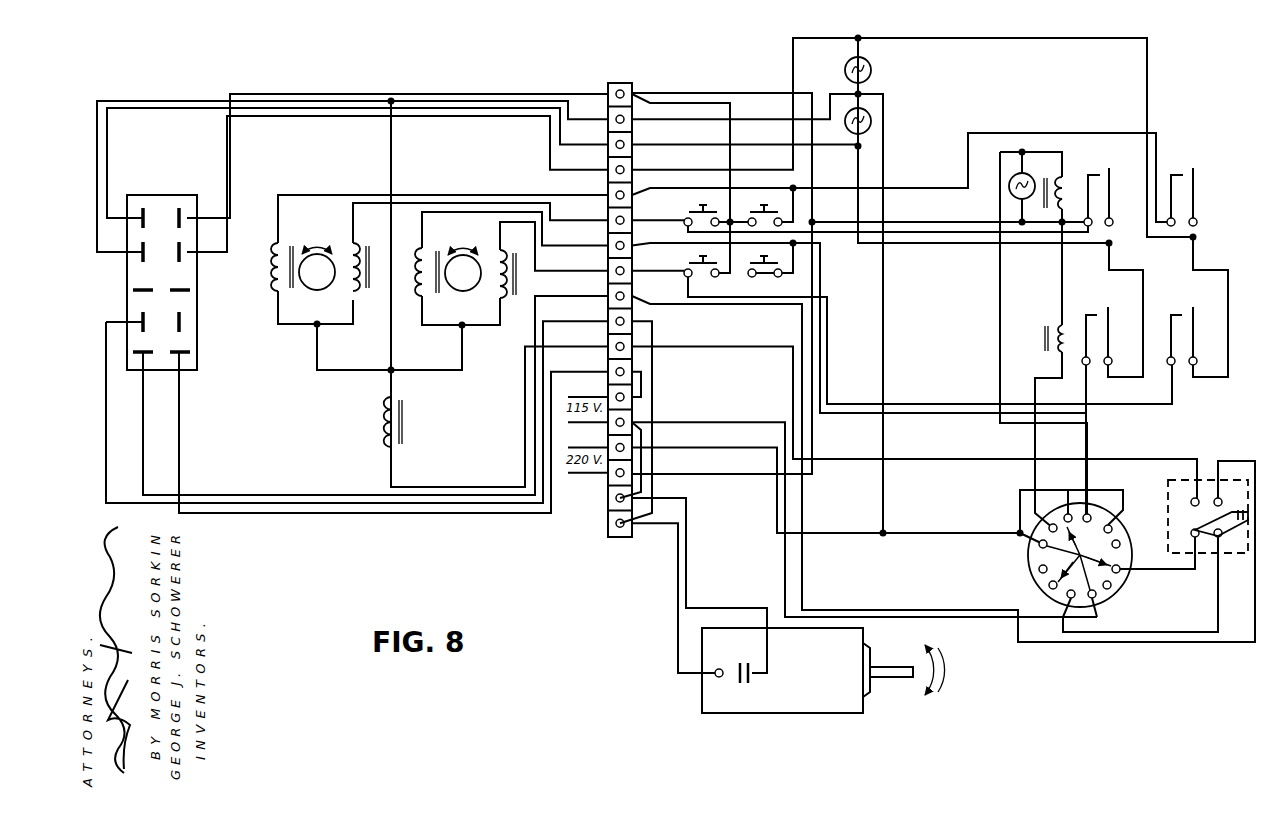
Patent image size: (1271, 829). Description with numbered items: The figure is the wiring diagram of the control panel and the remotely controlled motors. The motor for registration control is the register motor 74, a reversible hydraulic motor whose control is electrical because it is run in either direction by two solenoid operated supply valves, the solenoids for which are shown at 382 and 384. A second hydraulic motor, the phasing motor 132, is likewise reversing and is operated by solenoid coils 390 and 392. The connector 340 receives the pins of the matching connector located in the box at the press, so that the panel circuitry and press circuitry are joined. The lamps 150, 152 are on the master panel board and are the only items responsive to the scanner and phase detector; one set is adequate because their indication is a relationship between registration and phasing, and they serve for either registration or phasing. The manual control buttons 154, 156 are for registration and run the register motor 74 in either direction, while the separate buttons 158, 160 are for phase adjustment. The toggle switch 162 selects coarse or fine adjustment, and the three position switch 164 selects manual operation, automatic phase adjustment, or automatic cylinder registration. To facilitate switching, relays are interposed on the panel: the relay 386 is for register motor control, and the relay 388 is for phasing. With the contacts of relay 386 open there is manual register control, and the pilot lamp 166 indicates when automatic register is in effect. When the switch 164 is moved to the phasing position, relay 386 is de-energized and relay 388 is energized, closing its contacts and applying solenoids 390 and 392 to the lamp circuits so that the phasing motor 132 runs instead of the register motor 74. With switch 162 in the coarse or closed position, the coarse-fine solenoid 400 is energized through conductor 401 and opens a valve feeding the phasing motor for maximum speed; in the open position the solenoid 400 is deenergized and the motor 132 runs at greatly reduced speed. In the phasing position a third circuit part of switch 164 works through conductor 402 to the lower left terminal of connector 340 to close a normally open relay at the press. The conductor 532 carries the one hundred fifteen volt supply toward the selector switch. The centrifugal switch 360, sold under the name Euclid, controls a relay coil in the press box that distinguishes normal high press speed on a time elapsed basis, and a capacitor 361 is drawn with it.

The register motor 74 is at (317, 291).
The phasing motor 132 is at (463, 291).
The lamp 150 is at (872, 70).
The lamp 152 is at (872, 120).
The manual control button for registration 154 is at (764, 202).
The manual control button for registration 156 is at (701, 202).
The manual control button for phase adjustment 158 is at (764, 253).
The manual control button for phase adjustment 160 is at (701, 253).
The toggle switch 162 is at (1165, 506).
The three position switch 164 is at (1123, 587).
The pilot lamp 166 is at (1028, 172).
The connector 340 is at (200, 320).
The centrifugal switch 360 is at (800, 713).
The capacitor 361 is at (746, 683).
The solenoid 382 is at (270, 276).
The solenoid 384 is at (358, 250).
The relay for register motor control 386 is at (1065, 180).
The relay for phasing 388 is at (1065, 326).
The solenoid coil 390 is at (430, 250).
The solenoid coil 392 is at (506, 253).
The coarse-fine solenoid 400 is at (378, 428).
The conductor 401 is at (958, 458).
The conductor 402 is at (965, 615).
The conductor 532 is at (1152, 568).